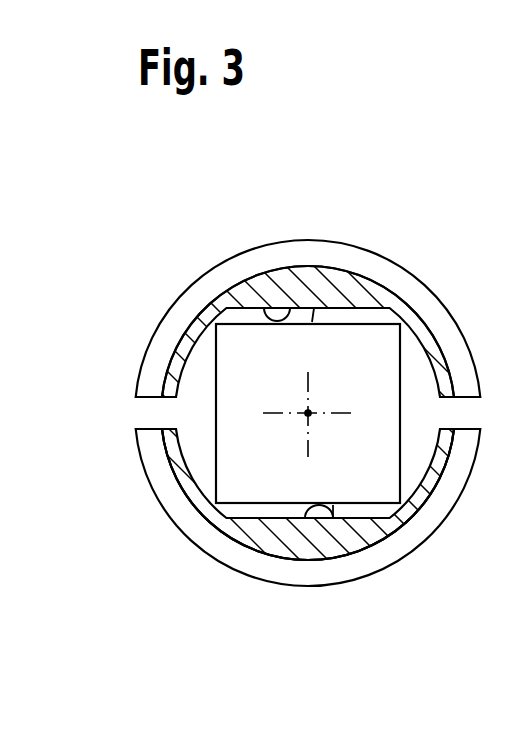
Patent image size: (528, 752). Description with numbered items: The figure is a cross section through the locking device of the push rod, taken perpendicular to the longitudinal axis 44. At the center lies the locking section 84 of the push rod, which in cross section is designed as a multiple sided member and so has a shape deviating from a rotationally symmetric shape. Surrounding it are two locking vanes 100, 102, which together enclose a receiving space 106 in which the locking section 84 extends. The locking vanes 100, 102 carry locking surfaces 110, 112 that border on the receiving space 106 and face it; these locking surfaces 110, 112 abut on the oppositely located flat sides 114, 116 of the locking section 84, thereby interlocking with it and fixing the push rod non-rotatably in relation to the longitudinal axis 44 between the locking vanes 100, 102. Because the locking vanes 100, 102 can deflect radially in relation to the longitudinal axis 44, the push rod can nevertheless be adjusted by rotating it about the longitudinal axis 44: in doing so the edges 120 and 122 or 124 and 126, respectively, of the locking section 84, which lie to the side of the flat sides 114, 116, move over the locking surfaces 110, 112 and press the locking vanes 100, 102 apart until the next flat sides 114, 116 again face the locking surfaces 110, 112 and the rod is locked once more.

The longitudinal axis 44 is at (309, 413).
The locking section 84 is at (250, 388).
The locking vane 100 is at (356, 305).
The locking vane 102 is at (347, 528).
The receiving space 106 is at (275, 512).
The locking surface 110 is at (264, 308).
The locking surface 112 is at (333, 519).
The flat side 114 is at (314, 307).
The flat side 116 is at (292, 518).
The edge 120 is at (378, 323).
The edge 122 is at (236, 308).
The edge 124 is at (236, 519).
The edge 126 is at (398, 544).